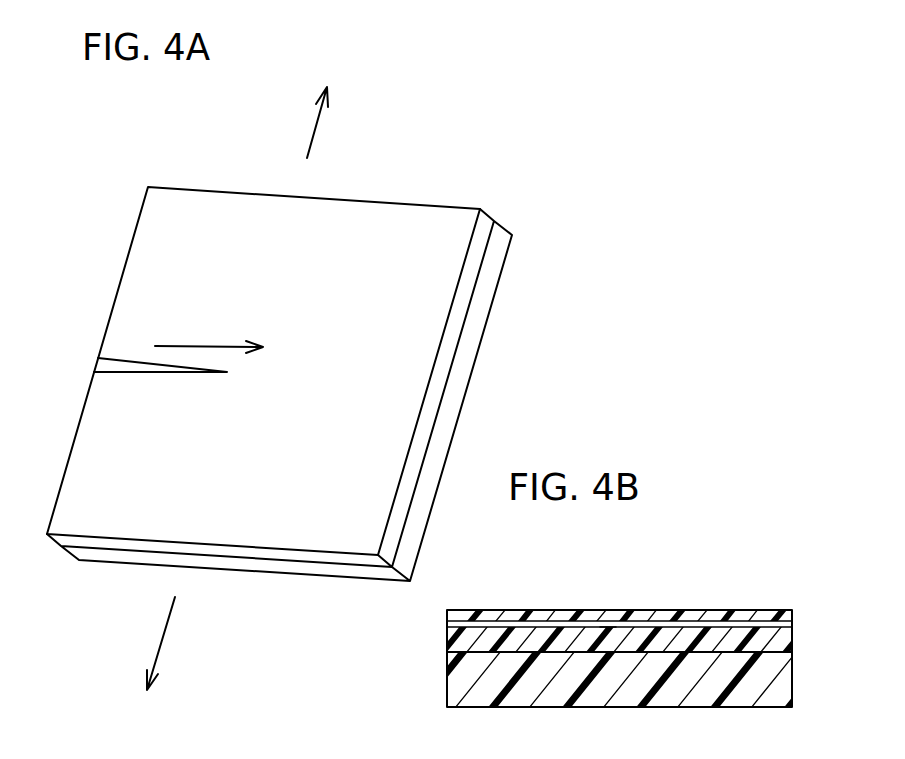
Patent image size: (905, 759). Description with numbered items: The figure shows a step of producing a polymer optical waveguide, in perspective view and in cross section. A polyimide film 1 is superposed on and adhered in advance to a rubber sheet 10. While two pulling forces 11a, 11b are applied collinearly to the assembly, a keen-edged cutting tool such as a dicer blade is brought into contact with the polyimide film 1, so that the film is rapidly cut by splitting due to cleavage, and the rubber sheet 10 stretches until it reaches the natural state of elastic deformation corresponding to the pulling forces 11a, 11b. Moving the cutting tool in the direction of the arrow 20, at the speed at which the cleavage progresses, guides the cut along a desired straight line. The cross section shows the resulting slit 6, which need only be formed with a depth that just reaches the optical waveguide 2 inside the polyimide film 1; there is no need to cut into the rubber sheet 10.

In FIG. 4A, the polyimide film 1 is at (198, 272).
In FIG. 4B, the polyimide film 1 is at (798, 610).
In FIG. 4B, the optical waveguide 2 is at (527, 625).
In FIG. 4A, the slit 6 is at (127, 368).
In FIG. 4B, the slit 6 is at (608, 627).
In FIG. 4A, the rubber sheet 10 is at (485, 292).
In FIG. 4B, the rubber sheet 10 is at (798, 652).
In FIG. 4A, the pulling force 11a is at (308, 143).
In FIG. 4A, the pulling force 11b is at (160, 638).
In FIG. 4A, the arrow 20 is at (178, 342).